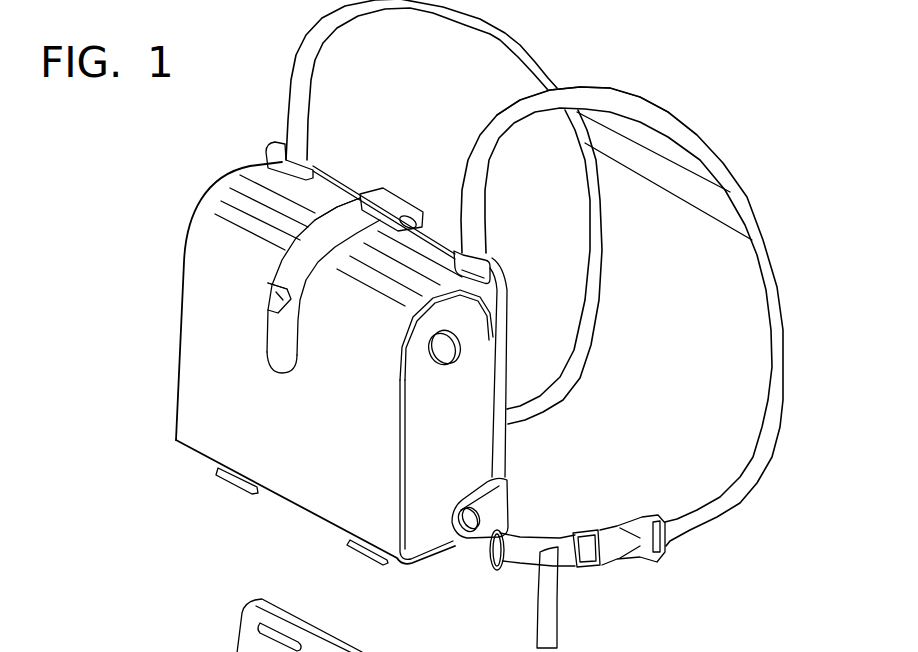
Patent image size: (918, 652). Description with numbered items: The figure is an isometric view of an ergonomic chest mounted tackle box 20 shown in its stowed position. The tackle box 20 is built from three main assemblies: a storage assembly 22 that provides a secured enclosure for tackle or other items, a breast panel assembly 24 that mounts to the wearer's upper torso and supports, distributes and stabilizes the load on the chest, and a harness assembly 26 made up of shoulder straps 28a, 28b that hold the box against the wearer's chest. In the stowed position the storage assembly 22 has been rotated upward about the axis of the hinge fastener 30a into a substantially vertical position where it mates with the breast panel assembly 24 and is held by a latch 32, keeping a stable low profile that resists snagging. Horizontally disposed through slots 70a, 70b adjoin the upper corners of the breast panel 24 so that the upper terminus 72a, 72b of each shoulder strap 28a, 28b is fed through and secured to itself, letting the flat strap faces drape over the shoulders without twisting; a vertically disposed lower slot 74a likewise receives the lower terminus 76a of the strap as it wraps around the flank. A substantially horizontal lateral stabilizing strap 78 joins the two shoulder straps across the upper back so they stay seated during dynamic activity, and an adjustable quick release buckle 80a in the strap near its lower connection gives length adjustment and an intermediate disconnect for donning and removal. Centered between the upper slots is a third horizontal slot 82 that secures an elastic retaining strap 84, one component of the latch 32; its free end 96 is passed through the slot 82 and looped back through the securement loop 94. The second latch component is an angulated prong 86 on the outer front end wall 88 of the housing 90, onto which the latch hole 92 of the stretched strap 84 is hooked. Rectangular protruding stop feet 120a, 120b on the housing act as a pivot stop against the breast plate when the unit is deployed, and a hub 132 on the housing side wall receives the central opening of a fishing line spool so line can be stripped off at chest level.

The tackle box 20 is at (185, 165).
The storage assembly 22 is at (176, 385).
The breast panel assembly 24 is at (507, 314).
The harness assembly 26 is at (640, 95).
The left shoulder strap 28a is at (670, 124).
The right shoulder strap 28b is at (503, 32).
The hinge fastener 30a is at (473, 518).
The latch 32 is at (268, 269).
The upper horizontally disposed through slot 70a is at (492, 268).
The upper horizontally disposed through slot 70b is at (316, 166).
The upper terminus of shoulder strap 72a is at (473, 250).
The upper terminus of shoulder strap 72b is at (297, 148).
The lower vertically disposed through slot 74a is at (493, 572).
The lower terminus of shoulder strap 76a is at (518, 550).
The lateral stabilizing strap 78 is at (682, 183).
The adjustable quick release buckle 80a is at (613, 557).
The third horizontally disposed through slot 82 is at (423, 217).
The retaining strap 84 is at (307, 240).
The angulated prong 86 is at (267, 298).
The outer front end wall 88 is at (374, 307).
The housing 90 is at (176, 408).
The latch hole 92 is at (268, 278).
The securement loop 94 is at (390, 197).
The free end of retaining strap 96 is at (277, 355).
The stop foot 120a is at (353, 555).
The stop foot 120b is at (230, 483).
The hub 132 is at (452, 350).